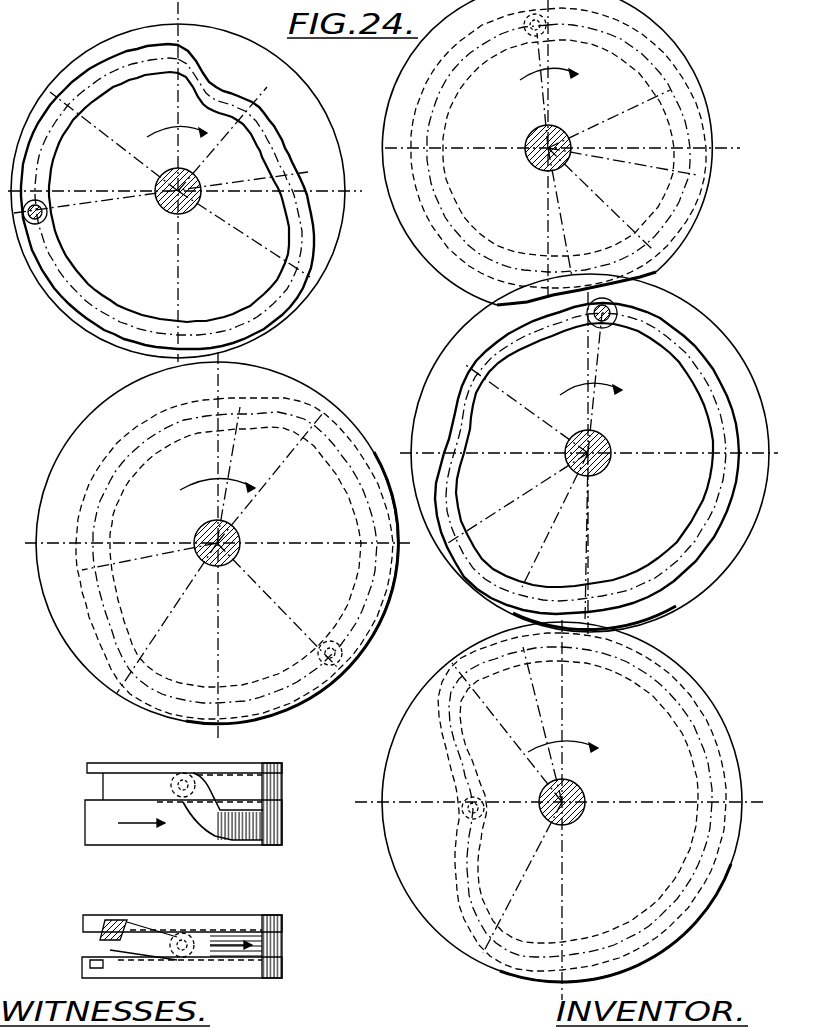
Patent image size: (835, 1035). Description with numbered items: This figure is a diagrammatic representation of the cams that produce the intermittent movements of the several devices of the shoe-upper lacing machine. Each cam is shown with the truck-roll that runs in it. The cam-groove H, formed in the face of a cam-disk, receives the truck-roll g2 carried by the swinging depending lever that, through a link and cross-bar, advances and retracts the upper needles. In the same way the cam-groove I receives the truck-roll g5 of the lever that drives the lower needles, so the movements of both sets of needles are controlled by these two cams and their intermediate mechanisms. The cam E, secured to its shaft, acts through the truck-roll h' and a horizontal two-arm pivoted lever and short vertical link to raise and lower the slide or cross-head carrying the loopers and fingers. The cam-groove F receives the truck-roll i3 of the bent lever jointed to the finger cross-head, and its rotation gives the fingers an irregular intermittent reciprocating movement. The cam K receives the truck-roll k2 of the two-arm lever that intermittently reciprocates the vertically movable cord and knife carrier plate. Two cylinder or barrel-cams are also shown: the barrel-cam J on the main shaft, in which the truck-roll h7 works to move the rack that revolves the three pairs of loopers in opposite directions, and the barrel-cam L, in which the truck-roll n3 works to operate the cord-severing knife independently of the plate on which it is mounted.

The cam-groove I is at (185, 182).
The truck-roll g5 is at (46, 216).
The cam K is at (561, 152).
The truck-roll k2 is at (553, 33).
The cam E is at (589, 455).
The truck-roll h' is at (581, 334).
The cam-groove F is at (217, 547).
The truck-roll i3 is at (318, 652).
The cam-groove H is at (560, 810).
The truck-roll g2 is at (465, 818).
The cylinder or barrel-cam J is at (159, 788).
The truck-roll h7 is at (178, 774).
The barrel-cam L is at (159, 928).
The truck-roll n3 is at (179, 933).